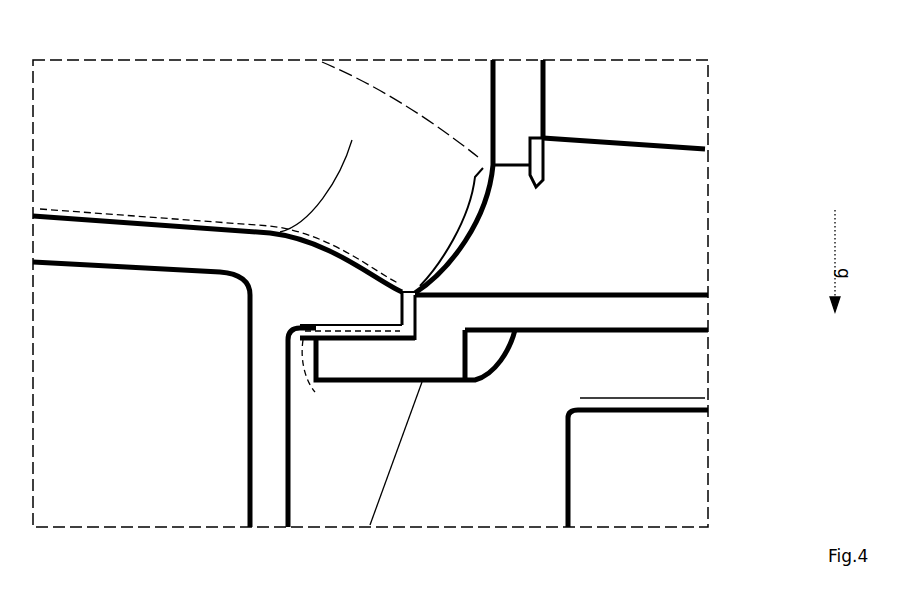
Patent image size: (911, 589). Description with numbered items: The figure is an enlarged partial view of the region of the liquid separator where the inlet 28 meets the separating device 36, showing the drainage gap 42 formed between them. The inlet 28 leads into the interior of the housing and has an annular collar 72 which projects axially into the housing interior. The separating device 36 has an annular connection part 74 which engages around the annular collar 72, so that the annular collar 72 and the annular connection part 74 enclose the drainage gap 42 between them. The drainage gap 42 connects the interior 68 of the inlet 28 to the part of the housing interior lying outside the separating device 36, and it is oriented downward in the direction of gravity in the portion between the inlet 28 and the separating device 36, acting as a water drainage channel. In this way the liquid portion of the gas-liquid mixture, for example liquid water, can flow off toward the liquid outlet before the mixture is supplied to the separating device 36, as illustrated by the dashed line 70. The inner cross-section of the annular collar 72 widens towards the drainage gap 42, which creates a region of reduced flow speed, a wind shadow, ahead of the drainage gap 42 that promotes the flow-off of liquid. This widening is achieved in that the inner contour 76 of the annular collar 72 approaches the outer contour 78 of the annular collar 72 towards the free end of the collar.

The inlet 28 is at (87, 93).
The separating device 36 is at (672, 210).
The drainage gap 42 is at (466, 256).
The interior of the inlet 68 is at (355, 147).
The dashed line 70 is at (128, 213).
The annular collar 72 is at (340, 308).
The annular connection part 74 is at (447, 357).
The inner contour 76 is at (402, 285).
The outer contour 78 is at (358, 323).